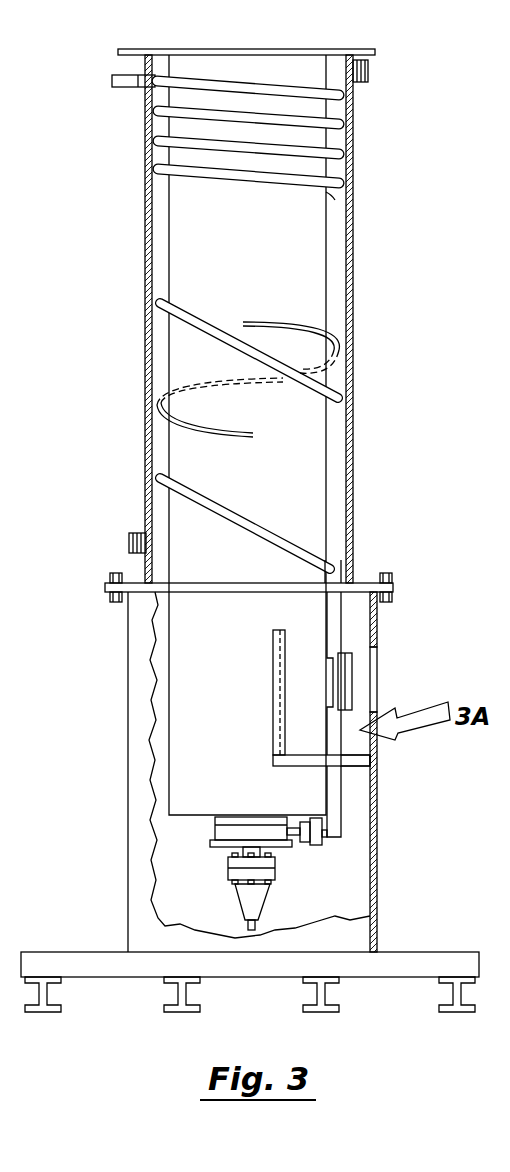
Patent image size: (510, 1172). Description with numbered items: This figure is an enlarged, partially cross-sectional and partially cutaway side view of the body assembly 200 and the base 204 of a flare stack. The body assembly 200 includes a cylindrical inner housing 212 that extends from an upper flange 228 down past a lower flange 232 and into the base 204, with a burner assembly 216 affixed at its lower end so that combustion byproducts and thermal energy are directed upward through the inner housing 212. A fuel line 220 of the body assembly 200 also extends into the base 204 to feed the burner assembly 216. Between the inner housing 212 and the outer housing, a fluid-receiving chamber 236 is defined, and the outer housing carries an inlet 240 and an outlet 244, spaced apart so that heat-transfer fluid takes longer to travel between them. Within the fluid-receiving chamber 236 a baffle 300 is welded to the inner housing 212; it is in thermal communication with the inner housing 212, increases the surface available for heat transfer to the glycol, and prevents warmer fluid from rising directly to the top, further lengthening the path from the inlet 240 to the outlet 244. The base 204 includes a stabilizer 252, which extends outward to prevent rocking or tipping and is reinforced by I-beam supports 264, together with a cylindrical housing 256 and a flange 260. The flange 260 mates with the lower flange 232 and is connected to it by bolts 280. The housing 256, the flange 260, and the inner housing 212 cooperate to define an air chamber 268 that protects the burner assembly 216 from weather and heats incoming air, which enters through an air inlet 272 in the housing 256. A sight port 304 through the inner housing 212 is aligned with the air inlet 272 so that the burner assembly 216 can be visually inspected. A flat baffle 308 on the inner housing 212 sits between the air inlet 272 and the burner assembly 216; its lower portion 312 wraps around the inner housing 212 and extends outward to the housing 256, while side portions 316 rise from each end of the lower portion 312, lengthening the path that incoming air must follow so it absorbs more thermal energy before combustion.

The body assembly 200 is at (144, 320).
The base 204 is at (128, 740).
The inner housing 212 is at (195, 692).
The burner assembly 216 is at (218, 828).
The fuel line 220 is at (255, 184).
The upper flange 228 is at (362, 49).
The lower flange 232 is at (380, 583).
The fluid-receiving chamber 236 is at (165, 462).
The inlet 240 is at (129, 545).
The outlet 244 is at (368, 72).
The stabilizer 252 is at (455, 960).
The housing 256 is at (377, 855).
The flange 260 is at (108, 592).
The supports 264 is at (465, 1012).
The air chamber 268 is at (345, 905).
The air inlet 272 is at (377, 681).
The bolts 280 is at (115, 573).
The baffle 300 is at (160, 405).
The sight port 304 is at (352, 668).
The baffle 308 is at (273, 708).
The lower portion 312 is at (360, 766).
The side portions 316 is at (273, 650).